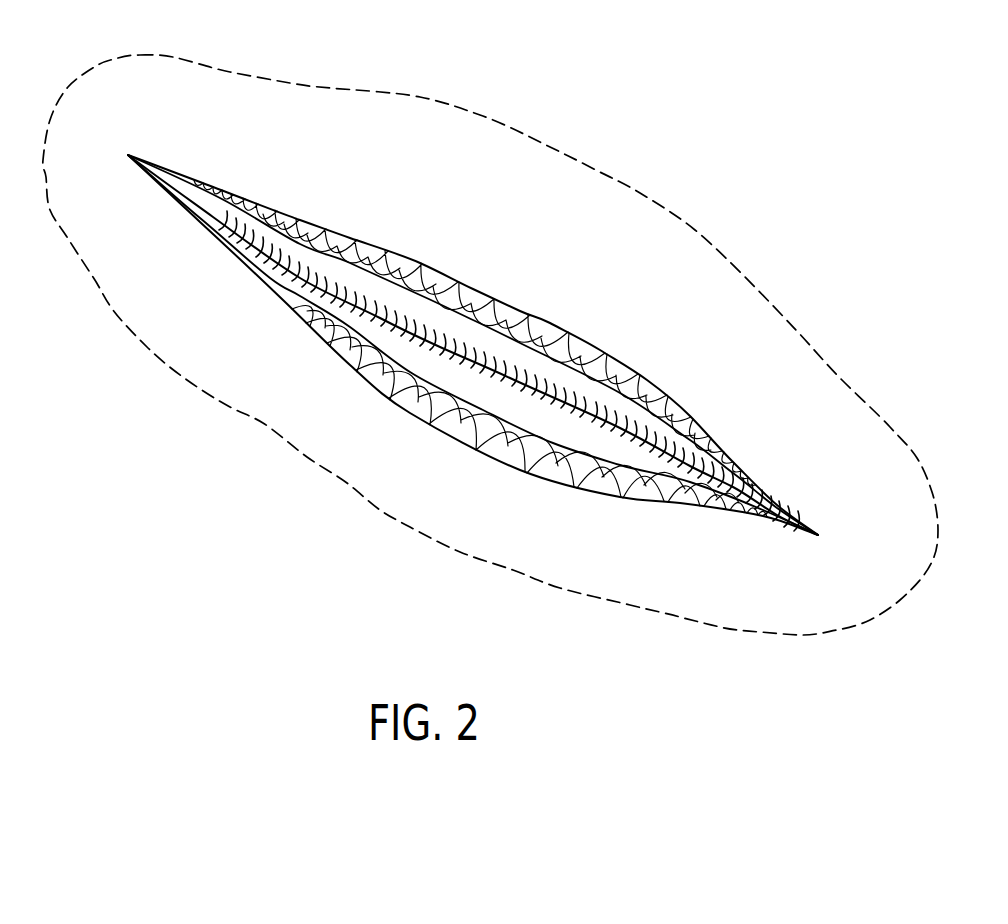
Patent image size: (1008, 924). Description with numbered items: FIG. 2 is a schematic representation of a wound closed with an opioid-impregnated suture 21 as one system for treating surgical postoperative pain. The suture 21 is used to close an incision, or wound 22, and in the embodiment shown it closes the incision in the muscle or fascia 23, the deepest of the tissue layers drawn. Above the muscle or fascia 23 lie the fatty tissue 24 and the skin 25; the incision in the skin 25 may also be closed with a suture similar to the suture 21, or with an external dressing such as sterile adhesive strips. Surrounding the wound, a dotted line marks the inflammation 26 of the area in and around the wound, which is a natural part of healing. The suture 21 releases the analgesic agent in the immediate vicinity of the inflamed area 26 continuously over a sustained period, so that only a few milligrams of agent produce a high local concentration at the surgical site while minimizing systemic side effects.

The opioid-impregnated suture 21 is at (390, 313).
The wound 22 is at (440, 340).
The muscle or fascia 23 is at (507, 353).
The fatty tissue 24 is at (585, 350).
The skin 25 is at (653, 381).
The inflammation 26 is at (458, 163).